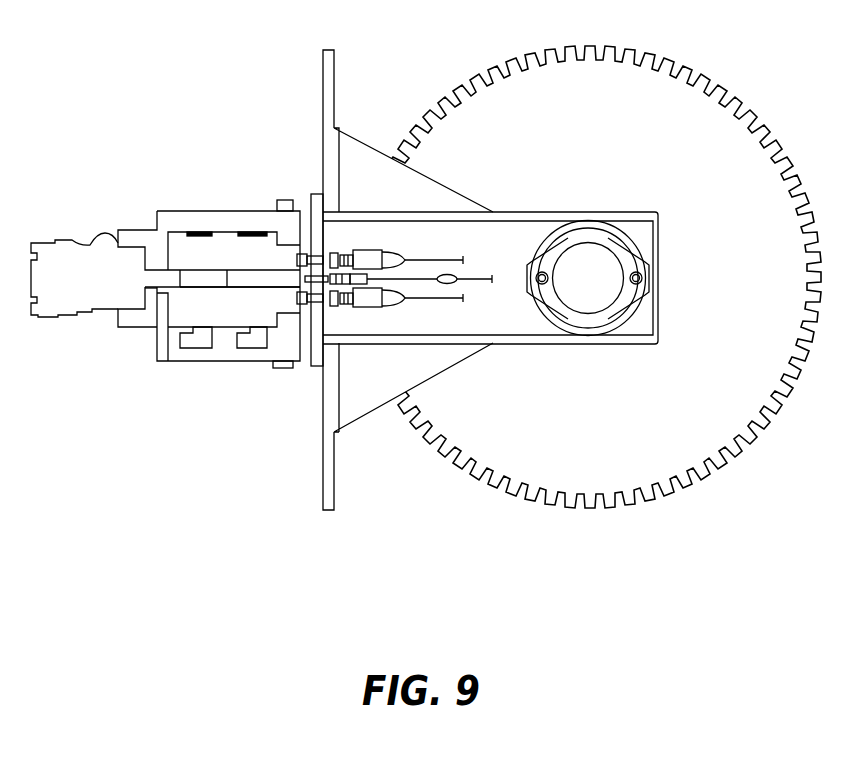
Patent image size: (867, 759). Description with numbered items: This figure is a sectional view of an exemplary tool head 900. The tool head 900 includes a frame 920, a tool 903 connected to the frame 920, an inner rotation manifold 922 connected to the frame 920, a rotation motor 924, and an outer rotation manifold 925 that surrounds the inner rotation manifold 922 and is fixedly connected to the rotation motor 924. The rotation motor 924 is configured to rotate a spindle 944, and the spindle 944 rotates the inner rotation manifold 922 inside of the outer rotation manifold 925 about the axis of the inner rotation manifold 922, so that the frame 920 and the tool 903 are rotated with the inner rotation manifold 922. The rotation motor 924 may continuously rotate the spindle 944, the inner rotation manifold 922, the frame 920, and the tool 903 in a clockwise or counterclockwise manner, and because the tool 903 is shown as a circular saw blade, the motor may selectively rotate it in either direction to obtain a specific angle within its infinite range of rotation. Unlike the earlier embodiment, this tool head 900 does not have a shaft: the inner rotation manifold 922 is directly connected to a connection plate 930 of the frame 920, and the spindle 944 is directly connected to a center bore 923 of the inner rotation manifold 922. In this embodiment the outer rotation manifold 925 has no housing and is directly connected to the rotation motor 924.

The tool head 900 is at (196, 75).
The tool 903 is at (732, 145).
The frame 920 is at (400, 182).
The inner rotation manifold 922 is at (247, 252).
The center bore 923 is at (192, 275).
The rotation motor 924 is at (45, 253).
The outer rotation manifold 925 is at (173, 220).
The connection plate 930 is at (307, 363).
The spindle 944 is at (148, 282).